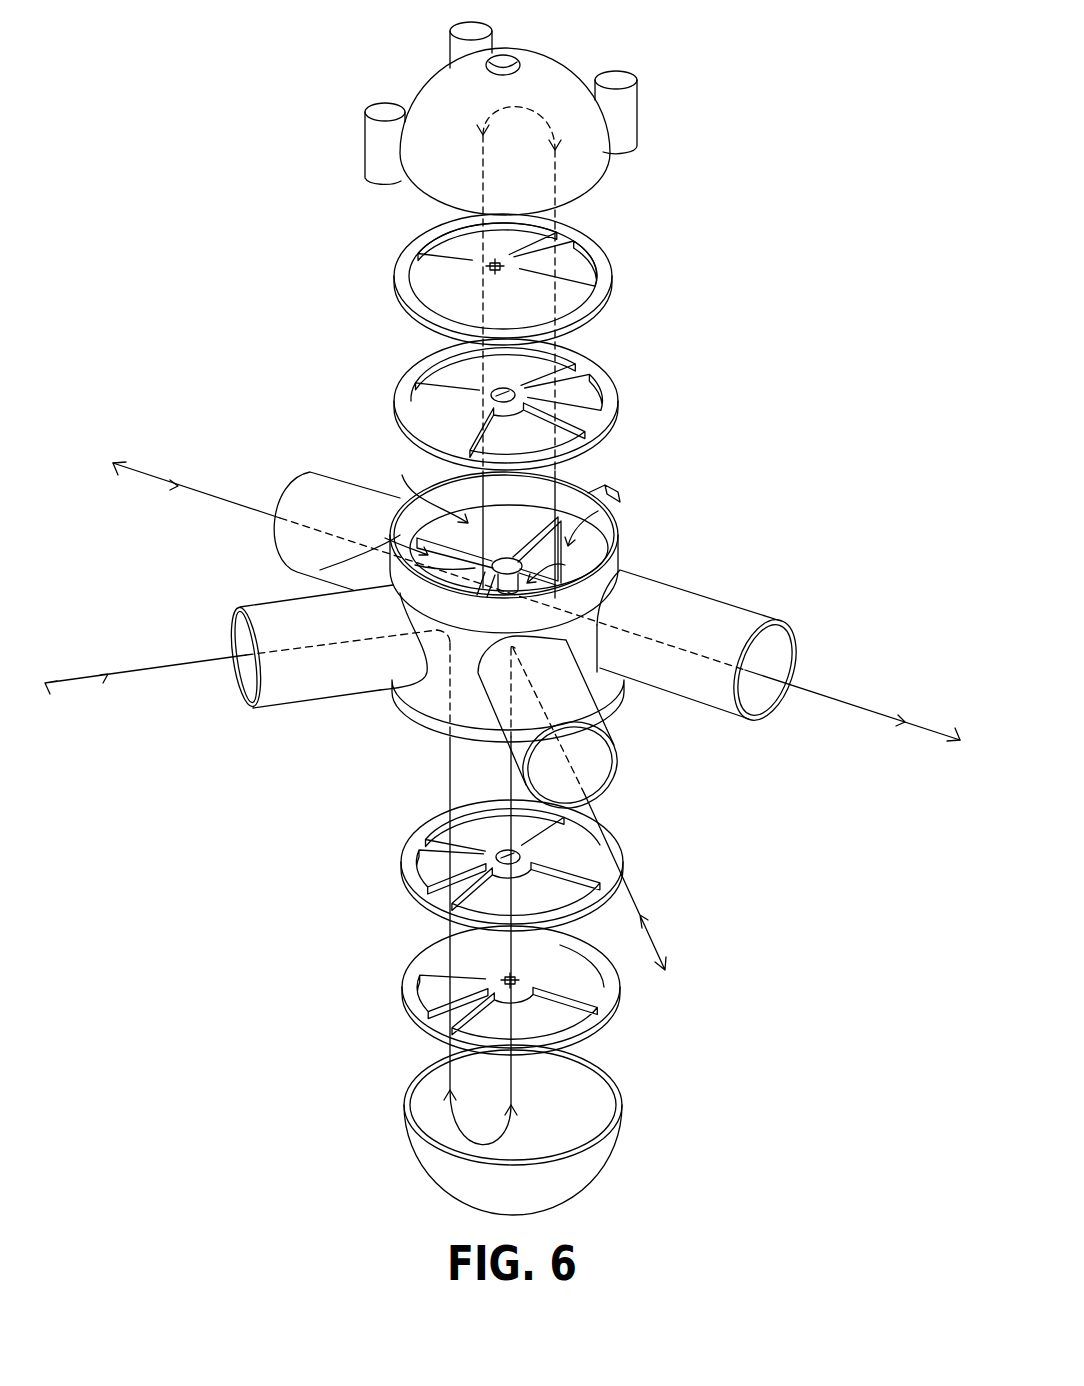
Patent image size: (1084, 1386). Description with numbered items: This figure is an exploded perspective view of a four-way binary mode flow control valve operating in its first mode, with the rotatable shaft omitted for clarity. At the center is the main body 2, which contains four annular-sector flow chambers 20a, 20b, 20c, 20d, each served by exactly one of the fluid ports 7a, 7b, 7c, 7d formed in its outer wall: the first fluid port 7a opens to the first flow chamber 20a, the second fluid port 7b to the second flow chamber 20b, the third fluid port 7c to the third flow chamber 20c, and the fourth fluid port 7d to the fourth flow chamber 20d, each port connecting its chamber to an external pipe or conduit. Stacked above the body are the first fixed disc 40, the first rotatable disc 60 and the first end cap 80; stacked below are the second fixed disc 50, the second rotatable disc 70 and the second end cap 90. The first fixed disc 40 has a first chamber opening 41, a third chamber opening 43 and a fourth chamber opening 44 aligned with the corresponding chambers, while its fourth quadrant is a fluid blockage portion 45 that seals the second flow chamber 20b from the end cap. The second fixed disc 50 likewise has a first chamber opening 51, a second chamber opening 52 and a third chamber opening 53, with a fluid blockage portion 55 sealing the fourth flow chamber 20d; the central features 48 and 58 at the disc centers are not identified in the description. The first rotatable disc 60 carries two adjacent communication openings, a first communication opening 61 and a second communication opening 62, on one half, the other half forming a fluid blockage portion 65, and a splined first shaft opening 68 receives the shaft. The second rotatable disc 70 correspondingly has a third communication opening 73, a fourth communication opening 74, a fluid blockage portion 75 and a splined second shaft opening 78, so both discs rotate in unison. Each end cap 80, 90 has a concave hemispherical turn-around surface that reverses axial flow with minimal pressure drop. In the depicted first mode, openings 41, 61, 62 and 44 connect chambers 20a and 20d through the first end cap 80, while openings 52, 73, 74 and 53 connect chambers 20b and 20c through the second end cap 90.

The main body 2 is at (620, 692).
The first fluid port 7a is at (286, 500).
The second fluid port 7b is at (250, 700).
The third fluid port 7c is at (600, 795).
The fourth fluid port 7d is at (780, 650).
The first flow chamber 20a is at (416, 488).
The second flow chamber 20b is at (400, 580).
The third flow chamber 20c is at (625, 578).
The fourth flow chamber 20d is at (600, 500).
The first fixed disc 40 is at (481, 392).
The first chamber opening 41 is at (430, 340).
The third chamber opening 43 is at (595, 415).
The fourth chamber opening 44 is at (568, 352).
The fluid blockage portion 45 is at (425, 385).
The upper disc hub hole 48 is at (500, 397).
The second fixed disc 50 is at (521, 866).
The first chamber opening 51 is at (480, 812).
The second chamber opening 52 is at (440, 880).
The third chamber opening 53 is at (585, 915).
The fluid blockage portion 55 is at (580, 835).
The lower disc hub hole 58 is at (522, 855).
The first rotatable disc 60 is at (477, 275).
The first communication opening 61 is at (470, 232).
The second communication opening 62 is at (590, 298).
The fluid blockage portion 65 is at (455, 297).
The first shaft opening 68 is at (467, 272).
The second rotatable disc 70 is at (503, 1007).
The third communication opening 73 is at (440, 1020).
The fourth communication opening 74 is at (595, 1035).
The fluid blockage portion 75 is at (610, 985).
The second shaft opening 78 is at (525, 981).
The first end cap 80 is at (432, 80).
The second end cap 90 is at (428, 1170).